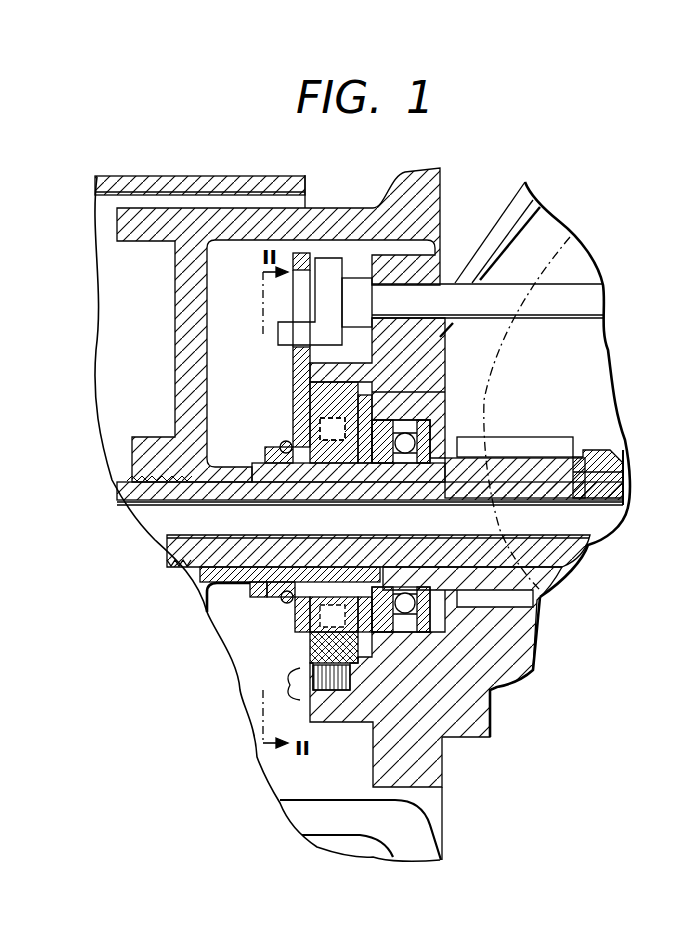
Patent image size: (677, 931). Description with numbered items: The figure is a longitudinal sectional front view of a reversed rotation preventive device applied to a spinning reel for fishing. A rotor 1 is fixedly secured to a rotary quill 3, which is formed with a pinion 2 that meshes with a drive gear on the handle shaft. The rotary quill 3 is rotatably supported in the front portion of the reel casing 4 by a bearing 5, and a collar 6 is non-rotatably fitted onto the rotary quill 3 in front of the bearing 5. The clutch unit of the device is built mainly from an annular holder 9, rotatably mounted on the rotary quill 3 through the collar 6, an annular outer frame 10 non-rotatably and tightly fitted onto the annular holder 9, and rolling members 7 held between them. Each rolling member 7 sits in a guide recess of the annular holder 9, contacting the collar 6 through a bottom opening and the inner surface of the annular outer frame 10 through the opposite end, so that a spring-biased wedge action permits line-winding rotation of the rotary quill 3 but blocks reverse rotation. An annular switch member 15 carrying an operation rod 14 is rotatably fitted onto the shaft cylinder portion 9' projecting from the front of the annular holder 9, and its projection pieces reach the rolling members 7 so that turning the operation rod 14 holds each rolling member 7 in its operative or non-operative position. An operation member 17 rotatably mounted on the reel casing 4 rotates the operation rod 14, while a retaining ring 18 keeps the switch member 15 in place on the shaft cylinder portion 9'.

The rotor 1 is at (130, 224).
The pinion 2 is at (553, 440).
The rotary quill 3 is at (190, 553).
The reel casing 4 is at (480, 723).
The bearing 5 is at (450, 620).
The collar 6 is at (265, 578).
The rolling members 7 is at (312, 418).
The annular holder 9 is at (450, 426).
The shaft cylinder portion 9' is at (266, 499).
The annular outer frame 10 is at (345, 386).
The operation rod 14 is at (303, 258).
The annular switch member 15 is at (292, 618).
The operation member 17 is at (457, 295).
The retaining ring 18 is at (282, 443).